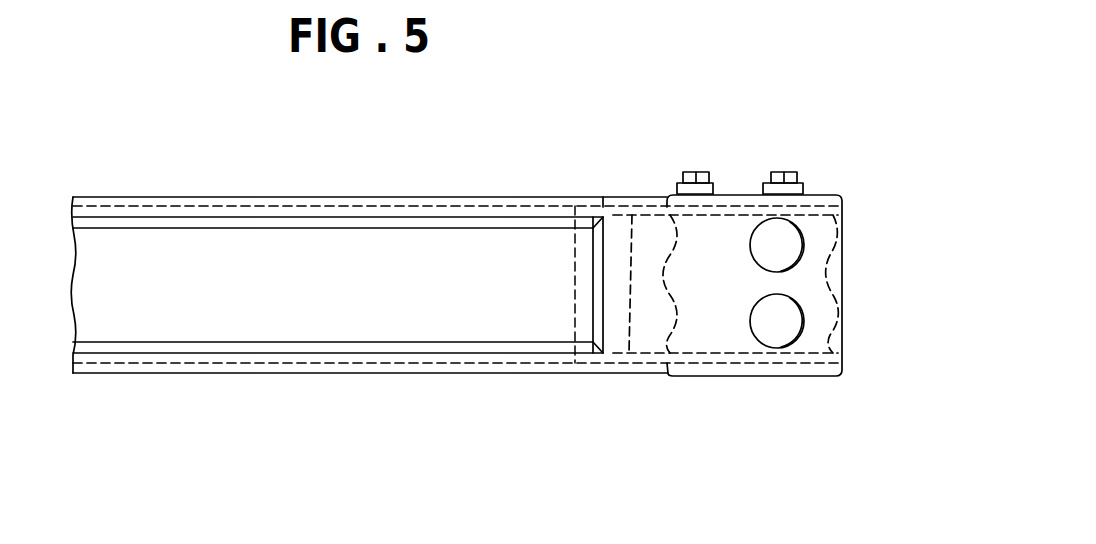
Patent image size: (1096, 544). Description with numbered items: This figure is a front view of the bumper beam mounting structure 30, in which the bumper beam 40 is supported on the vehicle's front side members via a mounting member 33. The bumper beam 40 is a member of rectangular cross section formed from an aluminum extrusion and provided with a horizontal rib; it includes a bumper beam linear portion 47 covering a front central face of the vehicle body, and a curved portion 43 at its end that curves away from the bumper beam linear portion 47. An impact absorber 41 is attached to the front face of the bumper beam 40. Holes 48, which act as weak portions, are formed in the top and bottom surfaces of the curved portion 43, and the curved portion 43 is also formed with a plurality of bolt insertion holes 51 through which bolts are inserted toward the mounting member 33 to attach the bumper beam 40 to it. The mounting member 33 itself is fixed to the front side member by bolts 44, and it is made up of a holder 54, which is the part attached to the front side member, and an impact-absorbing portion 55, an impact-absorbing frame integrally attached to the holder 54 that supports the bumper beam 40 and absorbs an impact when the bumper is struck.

The bumper beam mounting structure 30 is at (215, 152).
The mounting member 33 is at (705, 68).
The bumper beam 40 is at (265, 383).
The impact absorber 41 is at (333, 322).
The curved portion 43 is at (653, 373).
The bolt 44 is at (693, 172).
The bumper beam linear portion 47 is at (196, 373).
The hole (weak portion) 48 is at (592, 200).
The bolt insertion hole 51 is at (793, 222).
The holder 54 is at (606, 197).
The impact-absorbing portion 55 is at (649, 197).